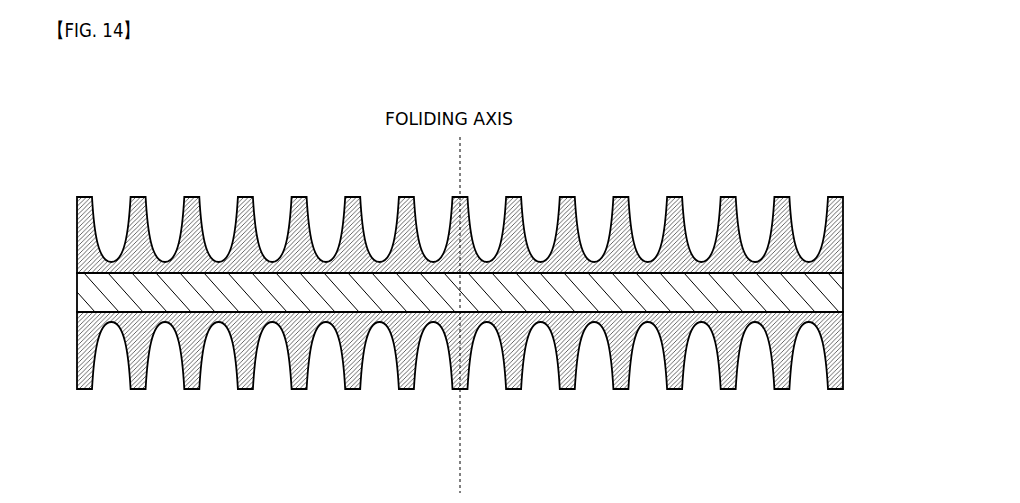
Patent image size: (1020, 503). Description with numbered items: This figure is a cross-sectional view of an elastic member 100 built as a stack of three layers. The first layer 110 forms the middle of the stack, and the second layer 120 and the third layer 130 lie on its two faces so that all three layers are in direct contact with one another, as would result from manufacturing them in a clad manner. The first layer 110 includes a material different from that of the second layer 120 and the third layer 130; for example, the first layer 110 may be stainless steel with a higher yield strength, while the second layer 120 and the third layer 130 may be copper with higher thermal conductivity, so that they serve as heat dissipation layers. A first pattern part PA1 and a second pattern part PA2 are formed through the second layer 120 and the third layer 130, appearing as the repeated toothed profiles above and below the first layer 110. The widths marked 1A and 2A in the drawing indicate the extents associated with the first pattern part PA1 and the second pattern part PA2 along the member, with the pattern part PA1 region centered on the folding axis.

The elastic member 100 is at (498, 293).
The first layer 110 is at (844, 290).
The second layer 120 is at (481, 350).
The third layer 130 is at (844, 240).
The first pattern part PA1 is at (539, 214).
The second pattern part PA2 is at (223, 214).
The folding area width 1A is at (567, 460).
The non-folding area width 2A is at (843, 460).